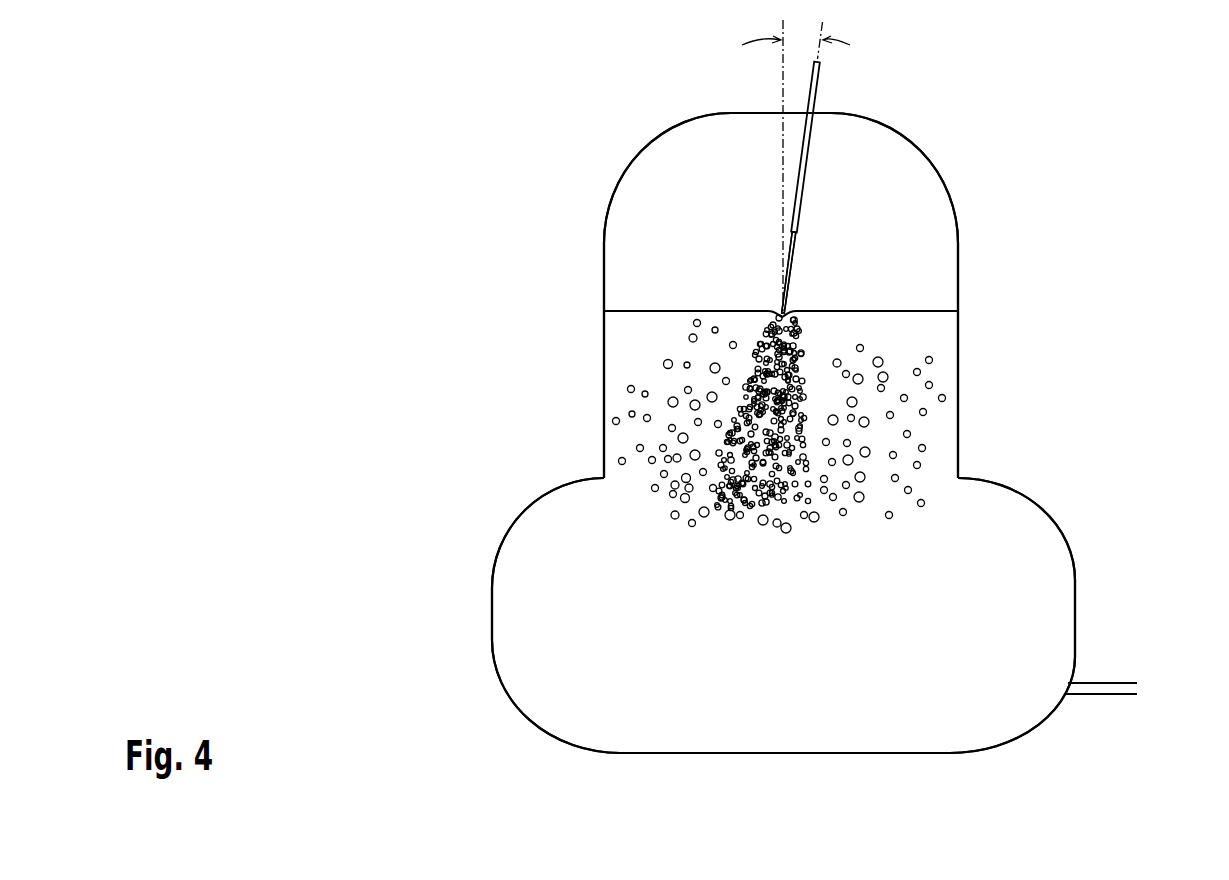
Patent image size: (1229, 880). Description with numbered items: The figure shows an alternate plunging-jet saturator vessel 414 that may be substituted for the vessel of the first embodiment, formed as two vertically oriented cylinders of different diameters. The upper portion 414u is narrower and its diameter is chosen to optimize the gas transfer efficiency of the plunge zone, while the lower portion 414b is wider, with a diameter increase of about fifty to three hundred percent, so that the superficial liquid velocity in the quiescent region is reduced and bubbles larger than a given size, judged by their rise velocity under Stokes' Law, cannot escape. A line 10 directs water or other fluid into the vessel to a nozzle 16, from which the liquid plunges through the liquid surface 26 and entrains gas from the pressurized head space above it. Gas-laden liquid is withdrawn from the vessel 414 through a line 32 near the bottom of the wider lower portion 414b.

The vessel 414 is at (793, 655).
The upper portion 414u is at (596, 223).
The lower portion 414b is at (483, 523).
The liquid surface 26 is at (637, 310).
The line 10 is at (808, 163).
The nozzle 16 is at (797, 234).
The line 32 is at (1122, 683).